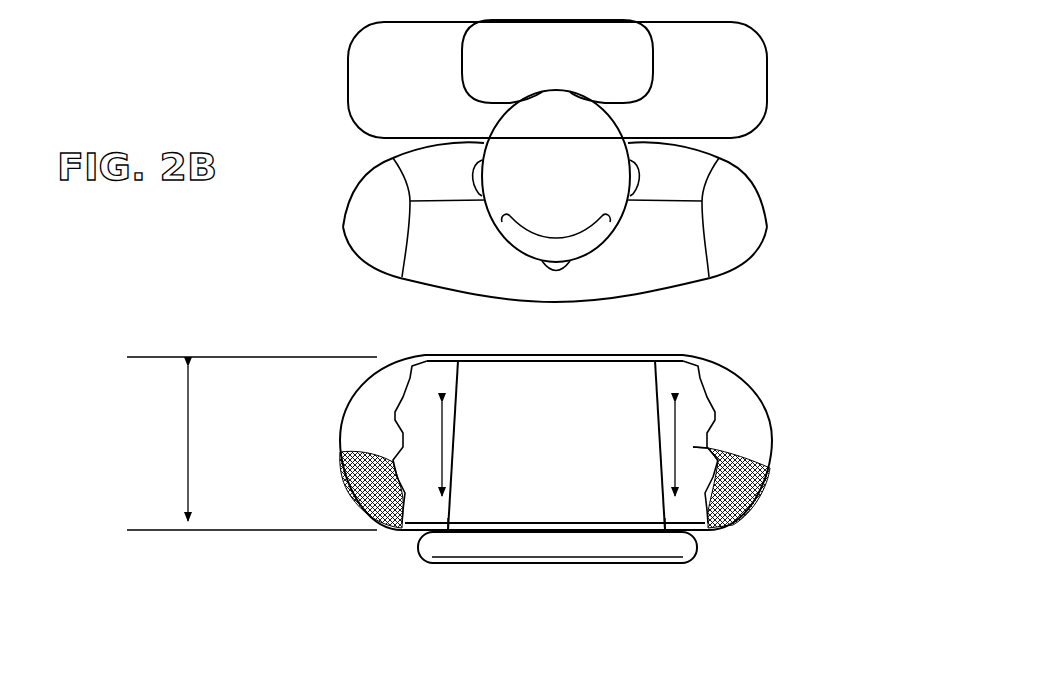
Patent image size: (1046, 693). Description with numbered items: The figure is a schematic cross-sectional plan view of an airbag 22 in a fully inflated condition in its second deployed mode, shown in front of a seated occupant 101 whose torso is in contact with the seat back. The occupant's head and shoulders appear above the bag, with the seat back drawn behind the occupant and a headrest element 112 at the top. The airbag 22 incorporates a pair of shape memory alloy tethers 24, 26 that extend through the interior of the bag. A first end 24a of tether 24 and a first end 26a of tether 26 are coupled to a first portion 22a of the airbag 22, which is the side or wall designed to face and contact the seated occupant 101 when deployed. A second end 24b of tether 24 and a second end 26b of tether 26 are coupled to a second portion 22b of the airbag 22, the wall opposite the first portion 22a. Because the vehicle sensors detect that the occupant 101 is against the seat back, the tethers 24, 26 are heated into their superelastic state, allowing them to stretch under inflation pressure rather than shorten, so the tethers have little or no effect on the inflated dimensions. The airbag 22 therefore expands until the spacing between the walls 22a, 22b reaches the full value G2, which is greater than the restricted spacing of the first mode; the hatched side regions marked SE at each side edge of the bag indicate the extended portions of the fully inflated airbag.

The seat back 112 is at (753, 90).
The occupant 101 is at (572, 174).
The airbag 22 is at (744, 363).
The first portion of the airbag 22a is at (570, 355).
The second portion of the airbag 22b is at (523, 533).
The SMA tether 24 is at (458, 418).
The first end of tether 24a is at (460, 355).
The second end of tether 24b is at (448, 530).
The SMA tether 26 is at (655, 420).
The first end of tether 26a is at (657, 355).
The second end of tether 26b is at (663, 530).
The side edge SE is at (708, 448).
The spacing between airbag walls G2 is at (252, 443).